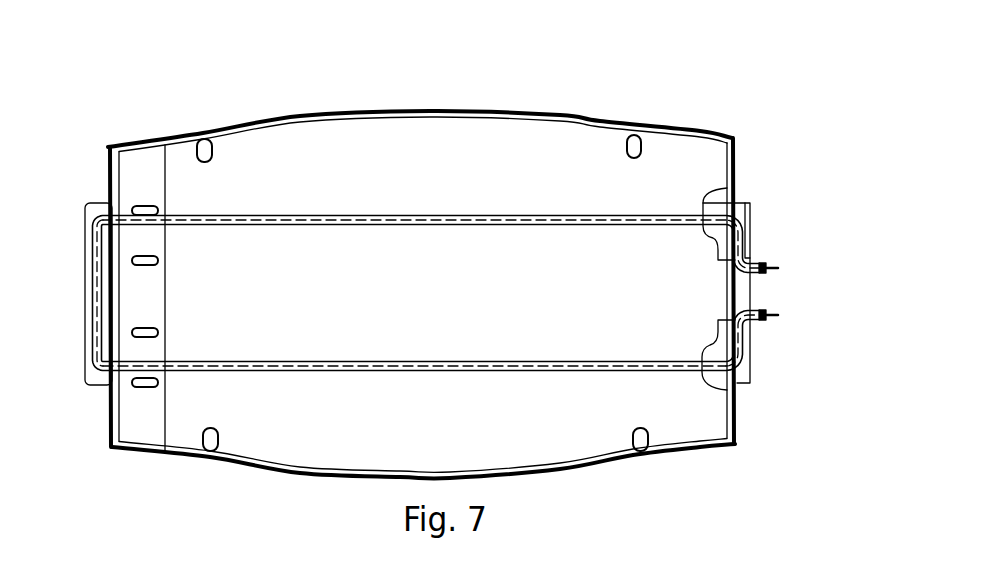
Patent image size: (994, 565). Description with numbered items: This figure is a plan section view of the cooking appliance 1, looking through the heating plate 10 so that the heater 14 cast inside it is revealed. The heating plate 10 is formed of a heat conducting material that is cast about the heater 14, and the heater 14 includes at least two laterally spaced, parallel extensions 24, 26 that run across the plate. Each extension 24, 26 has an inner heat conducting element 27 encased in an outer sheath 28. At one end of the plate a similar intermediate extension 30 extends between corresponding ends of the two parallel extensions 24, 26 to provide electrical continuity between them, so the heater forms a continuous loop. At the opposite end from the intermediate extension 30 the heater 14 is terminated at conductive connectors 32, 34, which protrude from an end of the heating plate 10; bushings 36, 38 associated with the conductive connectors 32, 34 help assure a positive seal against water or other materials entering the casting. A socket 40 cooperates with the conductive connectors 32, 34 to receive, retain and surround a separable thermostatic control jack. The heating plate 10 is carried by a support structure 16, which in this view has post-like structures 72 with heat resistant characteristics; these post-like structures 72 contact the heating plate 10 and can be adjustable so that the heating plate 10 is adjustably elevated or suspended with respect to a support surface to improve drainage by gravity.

The cooking appliance 1 is at (668, 67).
The heating plate 10 is at (112, 415).
The heater 14 is at (460, 360).
The support structure 16 is at (107, 175).
The extension 24 is at (555, 215).
The extension 26 is at (330, 372).
The inner heat conducting element 27 is at (712, 214).
The outer sheath 28 is at (742, 244).
The intermediate extension 30 is at (88, 270).
The conductive connector 32 is at (780, 266).
The conductive connector 34 is at (780, 317).
The bushing 36 is at (766, 272).
The bushing 38 is at (764, 321).
The socket 40 is at (762, 292).
The post-like structure 72 is at (198, 140).